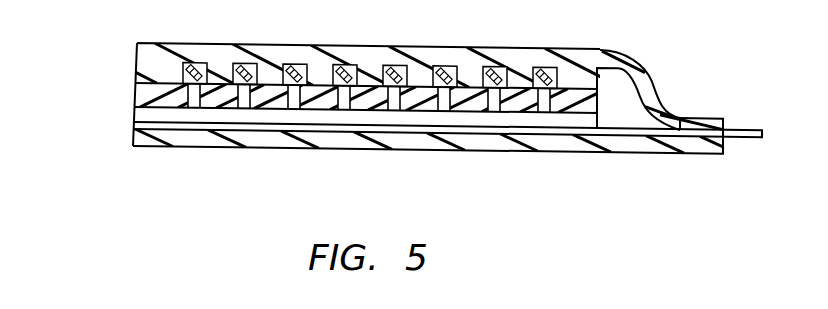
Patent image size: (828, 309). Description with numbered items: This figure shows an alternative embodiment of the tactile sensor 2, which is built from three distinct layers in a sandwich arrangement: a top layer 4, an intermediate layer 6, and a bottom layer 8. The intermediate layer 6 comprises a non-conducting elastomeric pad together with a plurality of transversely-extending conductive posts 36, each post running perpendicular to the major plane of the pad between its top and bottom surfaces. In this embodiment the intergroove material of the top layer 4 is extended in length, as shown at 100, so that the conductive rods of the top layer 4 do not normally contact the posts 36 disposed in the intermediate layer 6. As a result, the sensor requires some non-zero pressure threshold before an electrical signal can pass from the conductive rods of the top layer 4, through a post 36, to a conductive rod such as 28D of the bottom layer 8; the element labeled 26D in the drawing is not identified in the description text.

The tactile sensor 2 is at (276, 40).
The top layer 4 is at (133, 58).
The intermediate layer 6 is at (133, 97).
The bottom layer 8 is at (133, 136).
The conductive posts 36 is at (248, 103).
The extended intergroove material 100 is at (317, 76).
The conductor strip 26D is at (177, 126).
The conductive rod 28D is at (535, 121).